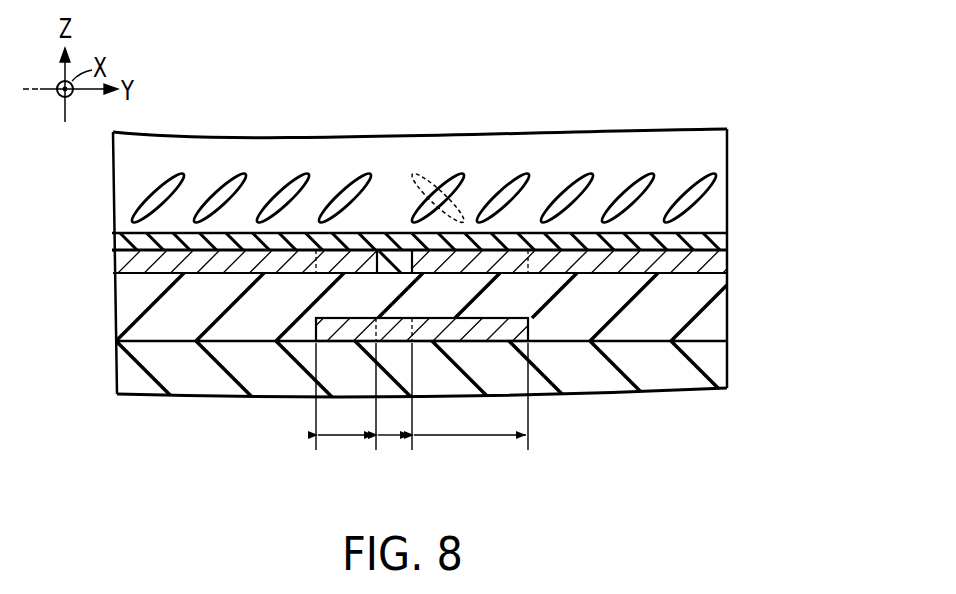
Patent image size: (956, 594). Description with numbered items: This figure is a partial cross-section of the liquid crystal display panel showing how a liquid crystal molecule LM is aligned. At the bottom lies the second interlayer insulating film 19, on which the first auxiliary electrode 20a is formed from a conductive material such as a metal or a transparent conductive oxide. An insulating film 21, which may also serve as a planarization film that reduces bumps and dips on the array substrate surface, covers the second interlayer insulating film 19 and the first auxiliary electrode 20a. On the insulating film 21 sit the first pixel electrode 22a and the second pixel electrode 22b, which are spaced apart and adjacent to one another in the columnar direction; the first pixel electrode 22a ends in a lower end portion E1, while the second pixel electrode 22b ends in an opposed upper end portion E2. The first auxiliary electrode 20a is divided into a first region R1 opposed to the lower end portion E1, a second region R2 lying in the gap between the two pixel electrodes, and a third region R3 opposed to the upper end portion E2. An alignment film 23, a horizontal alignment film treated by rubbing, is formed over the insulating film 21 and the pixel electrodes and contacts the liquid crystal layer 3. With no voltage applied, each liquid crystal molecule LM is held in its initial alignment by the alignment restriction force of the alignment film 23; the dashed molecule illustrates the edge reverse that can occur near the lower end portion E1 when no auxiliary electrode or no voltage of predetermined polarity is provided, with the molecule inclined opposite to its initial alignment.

The liquid crystal layer 3 is at (125, 173).
The liquid crystal molecule LM is at (226, 180).
The alignment film 23 is at (120, 244).
The second pixel electrode 22b is at (234, 350).
The upper end portion E2 is at (340, 263).
The first pixel electrode 22a is at (576, 350).
The lower end portion E1 is at (437, 257).
The insulating film 21 is at (122, 305).
The first auxiliary electrode 20a is at (344, 325).
The second interlayer insulating film 19 is at (122, 370).
The first region R1 is at (463, 437).
The second region R2 is at (395, 437).
The third region R3 is at (345, 437).